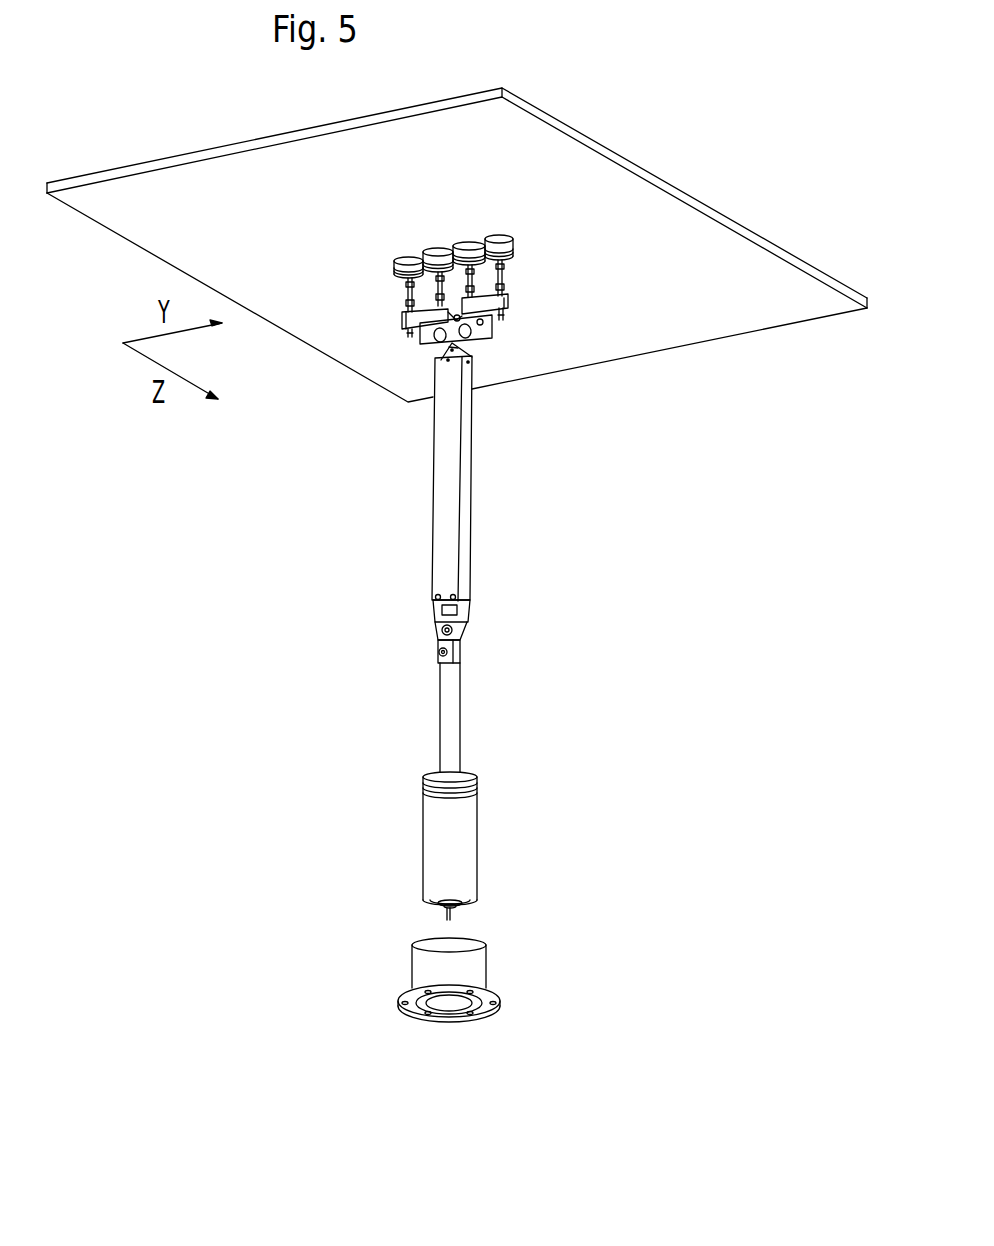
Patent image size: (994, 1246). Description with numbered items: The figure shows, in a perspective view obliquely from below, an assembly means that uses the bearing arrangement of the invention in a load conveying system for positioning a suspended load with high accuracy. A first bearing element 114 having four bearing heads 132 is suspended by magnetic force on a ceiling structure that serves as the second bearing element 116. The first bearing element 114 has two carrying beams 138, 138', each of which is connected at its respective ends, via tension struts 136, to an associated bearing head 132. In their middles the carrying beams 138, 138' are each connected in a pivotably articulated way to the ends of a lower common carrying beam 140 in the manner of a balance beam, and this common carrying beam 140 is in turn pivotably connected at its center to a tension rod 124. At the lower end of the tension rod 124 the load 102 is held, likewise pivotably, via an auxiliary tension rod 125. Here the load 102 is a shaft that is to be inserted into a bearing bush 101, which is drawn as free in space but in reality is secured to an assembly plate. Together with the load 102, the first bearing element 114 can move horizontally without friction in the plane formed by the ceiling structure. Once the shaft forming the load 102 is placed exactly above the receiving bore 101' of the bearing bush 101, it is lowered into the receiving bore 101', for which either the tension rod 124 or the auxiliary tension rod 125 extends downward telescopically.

The second bearing element 116 is at (560, 153).
The first bearing element 114 is at (528, 245).
The bearing head 132 is at (430, 250).
The tension strut 136 is at (403, 297).
The carrying beam 138 is at (373, 369).
The carrying beam 138' is at (534, 325).
The lower common carrying beam 140 is at (472, 348).
The tension rod 124 is at (467, 522).
The auxiliary tension rod 125 is at (452, 692).
The load 102 is at (470, 822).
The bearing bush 101 is at (487, 973).
The receiving bore 101' is at (465, 1042).